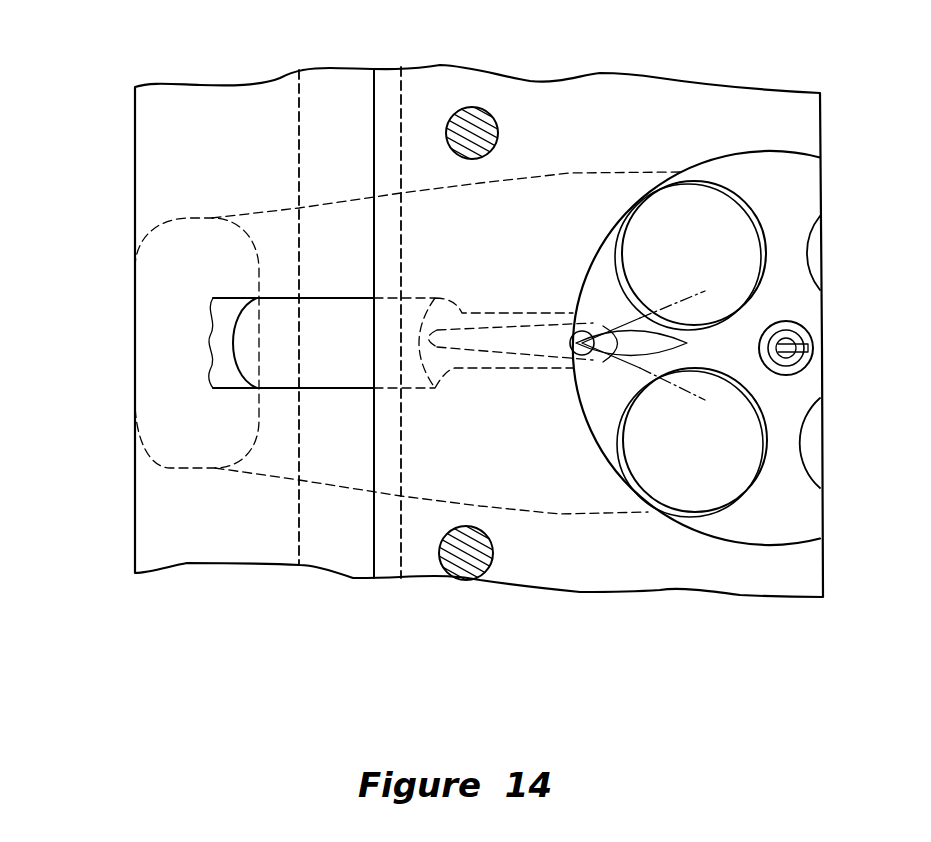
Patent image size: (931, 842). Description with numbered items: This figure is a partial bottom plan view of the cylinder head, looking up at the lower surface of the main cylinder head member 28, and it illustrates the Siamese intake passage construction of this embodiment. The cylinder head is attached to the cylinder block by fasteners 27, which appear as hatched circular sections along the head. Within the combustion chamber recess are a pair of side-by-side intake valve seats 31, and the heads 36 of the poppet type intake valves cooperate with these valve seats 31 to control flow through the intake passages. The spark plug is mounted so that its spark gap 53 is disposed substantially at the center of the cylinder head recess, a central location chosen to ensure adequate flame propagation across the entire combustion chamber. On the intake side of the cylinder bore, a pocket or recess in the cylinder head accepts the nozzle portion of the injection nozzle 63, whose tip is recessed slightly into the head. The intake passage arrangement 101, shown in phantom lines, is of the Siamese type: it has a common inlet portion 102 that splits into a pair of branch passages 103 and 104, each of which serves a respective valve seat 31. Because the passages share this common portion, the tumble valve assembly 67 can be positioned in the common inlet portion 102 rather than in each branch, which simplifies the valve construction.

The fasteners 27 is at (402, 128).
The main cylinder head member 28 is at (590, 595).
The intake valve seats 31 is at (757, 236).
The valve heads 36 is at (714, 203).
The spark gap 53 is at (808, 348).
The injection nozzle 63 is at (330, 395).
The tumble valve assembly 67 is at (299, 165).
The intake passage arrangement 101 is at (167, 383).
The common inlet portion 102 is at (283, 476).
The branch passage 103 is at (586, 172).
The branch passage 104 is at (588, 515).